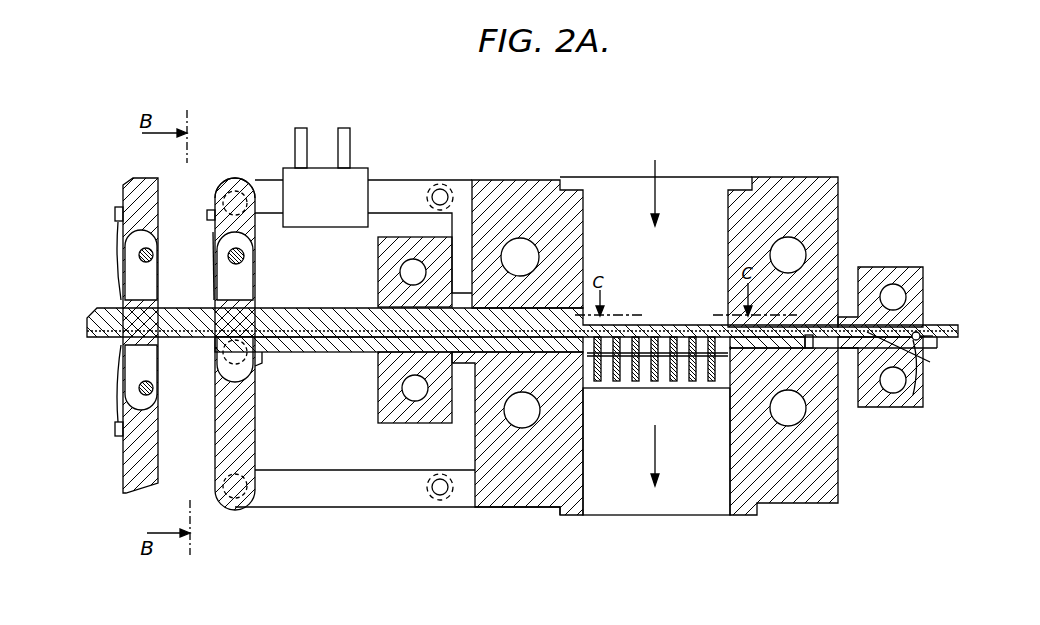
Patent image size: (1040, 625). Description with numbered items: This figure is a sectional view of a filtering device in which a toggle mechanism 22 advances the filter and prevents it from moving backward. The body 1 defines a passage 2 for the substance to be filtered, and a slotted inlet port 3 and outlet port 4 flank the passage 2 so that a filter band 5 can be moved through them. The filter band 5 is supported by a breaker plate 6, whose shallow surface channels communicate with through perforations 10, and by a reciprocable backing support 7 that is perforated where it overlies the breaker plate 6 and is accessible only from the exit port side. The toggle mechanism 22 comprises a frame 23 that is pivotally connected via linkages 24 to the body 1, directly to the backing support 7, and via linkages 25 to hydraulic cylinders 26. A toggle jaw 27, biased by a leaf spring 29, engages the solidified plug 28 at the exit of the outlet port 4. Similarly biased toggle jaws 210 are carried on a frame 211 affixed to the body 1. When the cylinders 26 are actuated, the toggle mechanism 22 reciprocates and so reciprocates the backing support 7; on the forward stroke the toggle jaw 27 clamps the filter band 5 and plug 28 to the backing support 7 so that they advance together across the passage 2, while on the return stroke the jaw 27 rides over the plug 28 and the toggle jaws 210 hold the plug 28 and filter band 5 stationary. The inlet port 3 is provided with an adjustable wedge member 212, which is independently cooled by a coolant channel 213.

The body 1 is at (786, 183).
The passage 2 is at (600, 176).
The inlet port 3 is at (882, 267).
The outlet port 4 is at (383, 270).
The filter band 5 is at (179, 338).
The breaker plate 6 is at (602, 517).
The backing support 7 is at (301, 352).
The through perforations 10 is at (622, 385).
The toggle mechanism 22 is at (390, 164).
The frame 23 is at (227, 428).
The linkages 24 is at (373, 502).
The linkages 25 is at (262, 183).
The hydraulic cylinders 26 is at (318, 172).
The toggle jaw 27 is at (238, 275).
The solidified plug 28 is at (92, 320).
The leaf spring 29 is at (213, 292).
The toggle jaws 210 is at (130, 258).
The frame 211 is at (130, 448).
The adjustable wedge member 212 is at (922, 338).
The coolant channel 213 is at (913, 362).